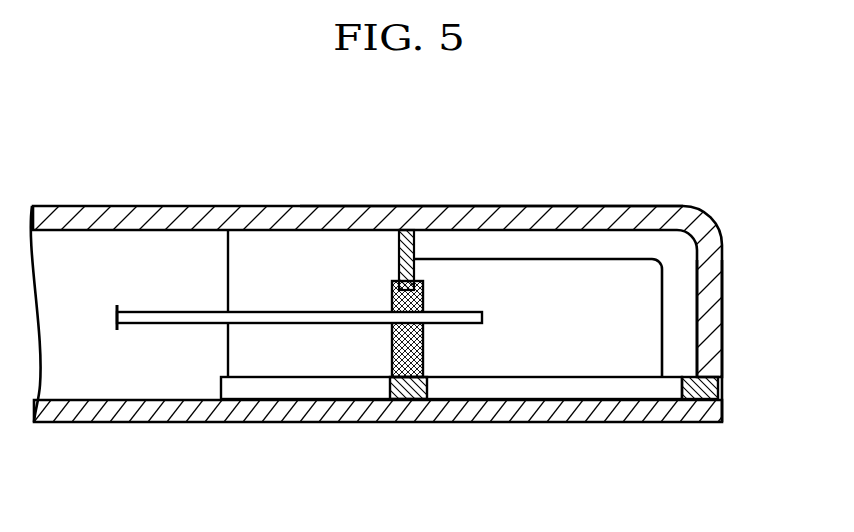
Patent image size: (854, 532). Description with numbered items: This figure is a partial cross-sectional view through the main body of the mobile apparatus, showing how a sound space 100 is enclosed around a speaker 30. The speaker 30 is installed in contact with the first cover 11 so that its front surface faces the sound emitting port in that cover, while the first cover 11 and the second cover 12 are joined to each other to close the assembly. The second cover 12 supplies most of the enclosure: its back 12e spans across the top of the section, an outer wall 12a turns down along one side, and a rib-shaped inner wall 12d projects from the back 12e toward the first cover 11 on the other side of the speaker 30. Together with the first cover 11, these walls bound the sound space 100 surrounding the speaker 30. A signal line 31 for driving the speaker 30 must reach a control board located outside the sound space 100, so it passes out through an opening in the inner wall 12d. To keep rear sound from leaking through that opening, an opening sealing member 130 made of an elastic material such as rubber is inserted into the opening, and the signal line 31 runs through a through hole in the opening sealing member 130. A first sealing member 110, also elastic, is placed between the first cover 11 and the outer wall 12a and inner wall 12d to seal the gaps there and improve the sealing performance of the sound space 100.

The sound space 100 is at (419, 308).
The first cover 11 is at (658, 405).
The second cover 12 is at (418, 280).
The outer wall 12a is at (710, 328).
The inner wall 12d is at (400, 260).
The back 12e is at (482, 208).
The speaker 30 is at (648, 278).
The signal line 31 is at (290, 313).
The first sealing member 110 is at (712, 387).
The opening sealing member 130 is at (390, 297).